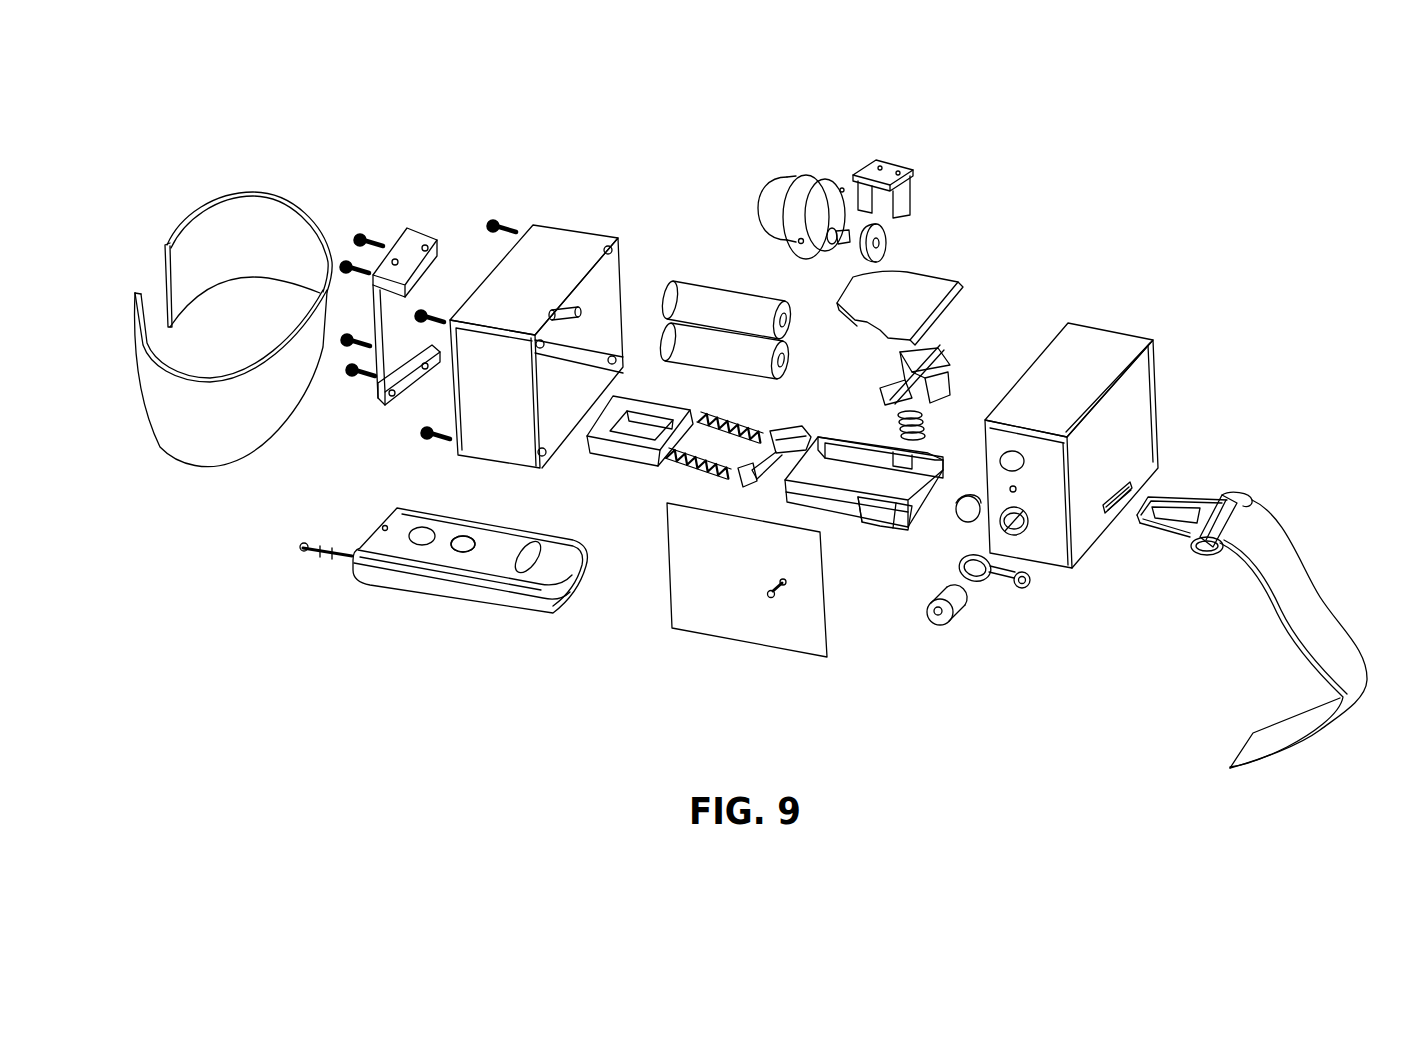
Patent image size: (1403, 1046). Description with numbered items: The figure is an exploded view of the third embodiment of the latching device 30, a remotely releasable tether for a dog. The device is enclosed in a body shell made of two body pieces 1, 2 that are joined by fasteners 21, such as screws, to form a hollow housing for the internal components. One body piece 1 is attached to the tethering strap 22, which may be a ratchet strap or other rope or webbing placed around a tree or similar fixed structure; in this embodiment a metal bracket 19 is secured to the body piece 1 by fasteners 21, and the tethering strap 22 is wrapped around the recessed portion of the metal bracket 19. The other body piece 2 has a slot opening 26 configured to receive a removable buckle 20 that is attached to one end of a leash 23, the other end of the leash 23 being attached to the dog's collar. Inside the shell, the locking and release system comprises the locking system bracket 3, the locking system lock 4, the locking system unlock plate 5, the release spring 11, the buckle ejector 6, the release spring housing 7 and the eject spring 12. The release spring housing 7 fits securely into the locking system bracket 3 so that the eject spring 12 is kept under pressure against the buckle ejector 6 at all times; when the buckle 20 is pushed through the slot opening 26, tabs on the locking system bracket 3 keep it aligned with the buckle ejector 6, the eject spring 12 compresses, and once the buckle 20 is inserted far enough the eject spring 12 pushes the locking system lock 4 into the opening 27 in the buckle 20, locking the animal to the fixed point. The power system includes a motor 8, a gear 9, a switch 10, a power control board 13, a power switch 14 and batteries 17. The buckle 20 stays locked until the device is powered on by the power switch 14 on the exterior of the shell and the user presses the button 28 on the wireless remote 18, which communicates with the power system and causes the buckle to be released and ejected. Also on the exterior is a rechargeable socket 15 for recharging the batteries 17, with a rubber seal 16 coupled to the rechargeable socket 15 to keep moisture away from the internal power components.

The body piece 1 is at (536, 284).
The body piece 2 is at (1071, 334).
The locking system bracket 3 is at (855, 607).
The locking system lock 4 is at (976, 270).
The locking system unlock plate 5 is at (929, 222).
The buckle ejector 6 is at (717, 572).
The release spring housing 7 is at (603, 557).
The motor 8 is at (793, 179).
The gear 9 is at (918, 181).
The switch 10 is at (866, 159).
The release spring 11 is at (849, 577).
The eject spring 12 is at (662, 565).
The power control board 13 is at (747, 610).
The power switch 14 is at (910, 606).
The rechargeable socket 15 is at (969, 651).
The rubber seal 16 is at (1034, 634).
The batteries 17 is at (715, 240).
The wireless remote 18 is at (443, 613).
The metal bracket 19 is at (429, 252).
The removable buckle 20 is at (1181, 627).
The fasteners 21 is at (429, 269).
The tethering strap 22 is at (242, 283).
The leash 23 is at (1282, 634).
The slot opening 26 is at (1128, 492).
The opening 27 is at (1189, 499).
The button 28 is at (455, 549).
The latching device 30 is at (221, 537).